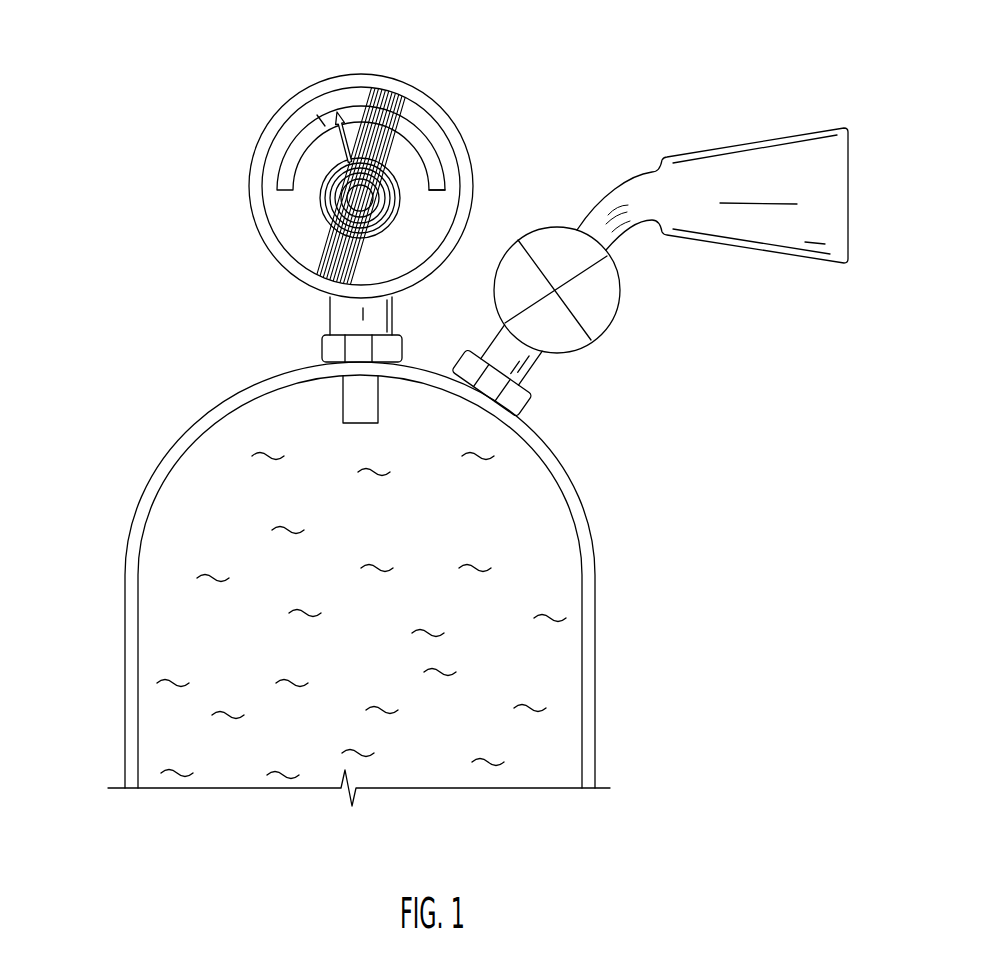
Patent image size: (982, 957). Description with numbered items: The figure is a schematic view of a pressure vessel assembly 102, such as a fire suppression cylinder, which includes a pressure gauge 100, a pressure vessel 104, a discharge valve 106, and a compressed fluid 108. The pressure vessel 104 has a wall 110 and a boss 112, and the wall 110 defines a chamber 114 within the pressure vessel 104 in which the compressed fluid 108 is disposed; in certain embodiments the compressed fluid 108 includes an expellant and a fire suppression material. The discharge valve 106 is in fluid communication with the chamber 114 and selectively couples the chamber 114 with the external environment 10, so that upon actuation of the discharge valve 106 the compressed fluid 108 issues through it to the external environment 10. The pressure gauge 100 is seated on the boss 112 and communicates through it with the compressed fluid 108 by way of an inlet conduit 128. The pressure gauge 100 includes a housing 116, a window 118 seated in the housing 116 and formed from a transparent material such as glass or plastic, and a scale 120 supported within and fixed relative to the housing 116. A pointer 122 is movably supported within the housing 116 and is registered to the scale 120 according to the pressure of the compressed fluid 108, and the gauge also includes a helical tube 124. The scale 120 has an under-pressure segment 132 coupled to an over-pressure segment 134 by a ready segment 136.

The external environment 10 is at (866, 342).
The pressure gauge 100 is at (237, 225).
The pressure vessel assembly 102 is at (89, 821).
The pressure vessel 104 is at (145, 503).
The discharge valve 106 is at (612, 327).
The compressed fluid 108 is at (477, 567).
The wall 110 is at (588, 665).
The boss 112 is at (320, 350).
The chamber 114 is at (372, 545).
The housing 116 is at (342, 75).
The window 118 is at (280, 190).
The scale 120 is at (347, 152).
The pointer 122 is at (345, 130).
The helical tube 124 is at (397, 210).
The inlet conduit 128 is at (392, 313).
The under-pressure segment 132 is at (300, 135).
The over-pressure segment 134 is at (433, 170).
The ready segment 136 is at (387, 133).